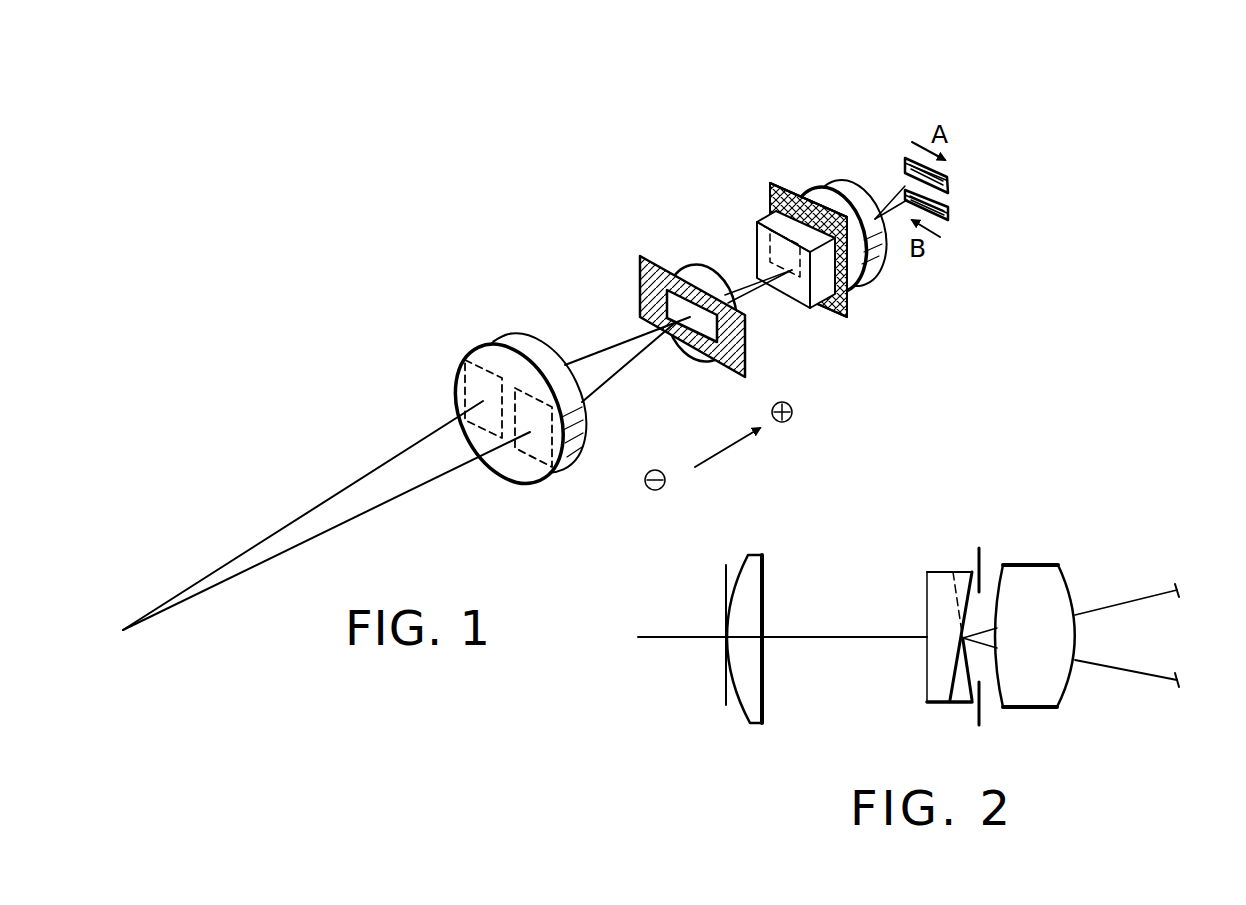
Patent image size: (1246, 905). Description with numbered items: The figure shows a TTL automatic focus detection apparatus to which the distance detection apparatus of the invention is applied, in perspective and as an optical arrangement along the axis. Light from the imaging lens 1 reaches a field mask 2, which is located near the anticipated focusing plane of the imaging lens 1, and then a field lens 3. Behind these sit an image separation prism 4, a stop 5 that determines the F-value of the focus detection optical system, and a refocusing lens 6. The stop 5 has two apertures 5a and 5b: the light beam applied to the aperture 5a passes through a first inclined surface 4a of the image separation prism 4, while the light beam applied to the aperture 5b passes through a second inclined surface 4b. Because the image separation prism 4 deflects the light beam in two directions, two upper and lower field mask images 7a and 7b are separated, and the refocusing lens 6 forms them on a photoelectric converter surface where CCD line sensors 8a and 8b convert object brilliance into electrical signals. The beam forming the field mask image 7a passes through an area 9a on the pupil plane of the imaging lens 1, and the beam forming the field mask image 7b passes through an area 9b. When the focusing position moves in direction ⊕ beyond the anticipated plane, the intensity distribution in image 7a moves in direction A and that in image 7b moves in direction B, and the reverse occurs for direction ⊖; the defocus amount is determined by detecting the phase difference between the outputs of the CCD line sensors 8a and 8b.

In FIG. 1, the imaging lens 1 is at (588, 435).
In FIG. 1, the field mask 2 is at (747, 360).
In FIG. 2, the field mask 2 is at (723, 693).
In FIG. 1, the field lens 3 is at (693, 282).
In FIG. 2, the field lens 3 is at (762, 695).
In FIG. 1, the image separation prism 4 is at (793, 303).
In FIG. 2, the image separation prism 4 is at (942, 602).
In FIG. 1, the first inclined surface 4a is at (850, 297).
In FIG. 2, the first inclined surface 4a is at (943, 683).
In FIG. 1, the second inclined surface 4b is at (762, 219).
In FIG. 2, the second inclined surface 4b is at (962, 698).
In FIG. 1, the stop 5 is at (837, 313).
In FIG. 2, the stop 5 is at (982, 555).
In FIG. 1, the aperture 5a is at (877, 287).
In FIG. 1, the aperture 5b is at (797, 197).
In FIG. 1, the refocusing lens 6 is at (888, 250).
In FIG. 2, the refocusing lens 6 is at (1063, 693).
In FIG. 1, the field mask image 7a is at (948, 173).
In FIG. 1, the field mask image 7b is at (948, 210).
In FIG. 1, the CCD line sensor 8a is at (912, 160).
In FIG. 2, the CCD line sensor 8a is at (1178, 591).
In FIG. 1, the CCD line sensor 8b is at (907, 187).
In FIG. 2, the CCD line sensor 8b is at (1178, 680).
In FIG. 1, the area on pupil plane 9a is at (460, 385).
In FIG. 1, the area on pupil plane 9b is at (532, 470).